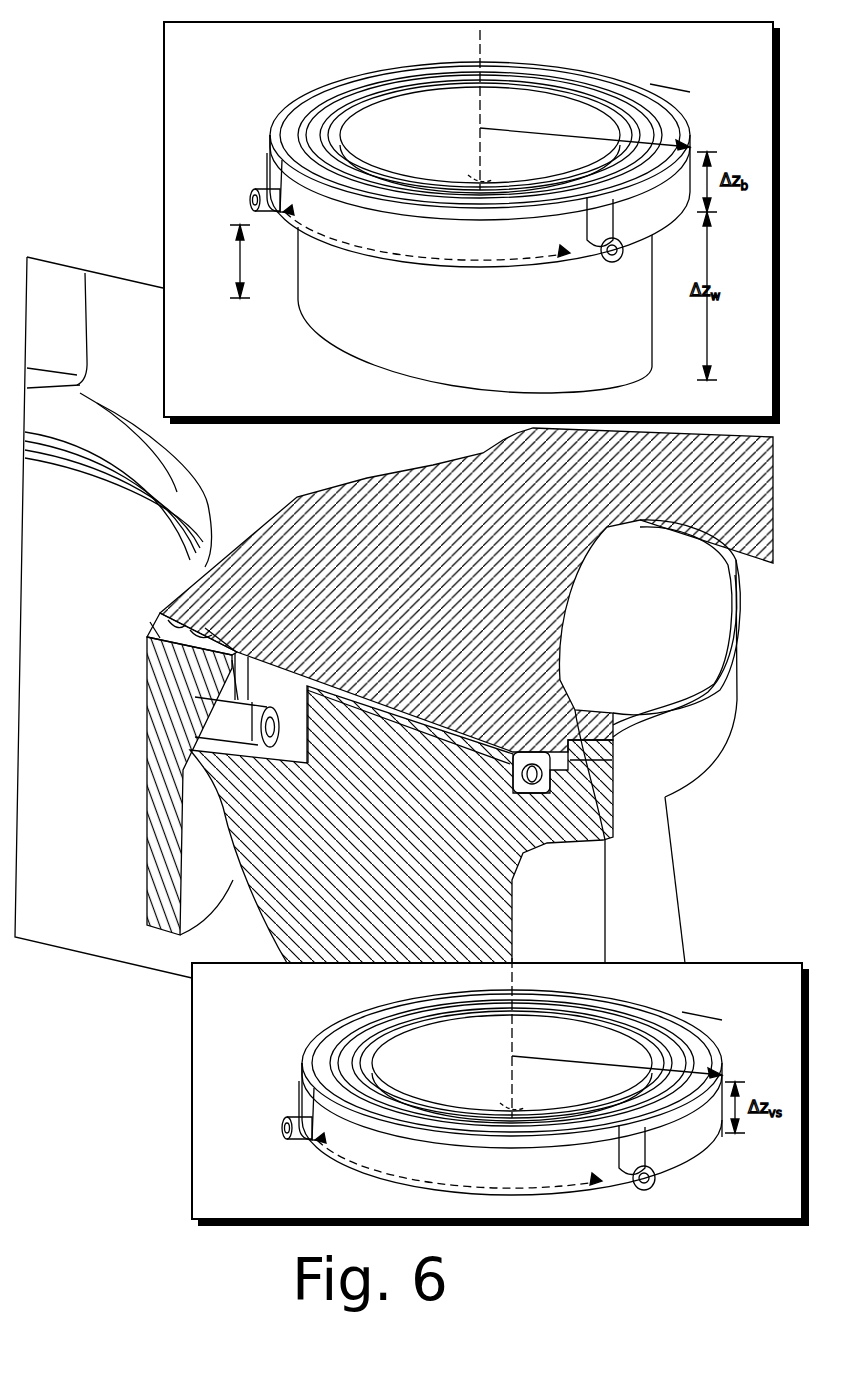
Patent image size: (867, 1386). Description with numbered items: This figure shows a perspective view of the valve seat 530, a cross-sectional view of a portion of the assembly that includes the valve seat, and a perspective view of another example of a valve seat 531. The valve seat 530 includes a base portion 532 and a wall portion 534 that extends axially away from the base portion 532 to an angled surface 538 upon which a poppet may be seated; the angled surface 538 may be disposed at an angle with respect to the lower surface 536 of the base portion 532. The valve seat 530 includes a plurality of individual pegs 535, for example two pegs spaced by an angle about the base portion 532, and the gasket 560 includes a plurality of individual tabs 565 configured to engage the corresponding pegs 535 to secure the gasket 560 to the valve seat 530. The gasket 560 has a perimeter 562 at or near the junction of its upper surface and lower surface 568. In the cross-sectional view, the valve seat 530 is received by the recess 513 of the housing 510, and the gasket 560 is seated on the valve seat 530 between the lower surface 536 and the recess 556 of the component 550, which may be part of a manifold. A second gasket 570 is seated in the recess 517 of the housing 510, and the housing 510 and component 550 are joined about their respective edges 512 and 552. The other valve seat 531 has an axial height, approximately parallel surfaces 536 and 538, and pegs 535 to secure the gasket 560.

The housing 510 is at (405, 901).
The edge 512 is at (663, 770).
The recess 513 is at (299, 698).
The recess 517 is at (526, 800).
The valve seat 530 is at (82, 537).
The valve seat 531 is at (693, 1158).
The base portion 532 is at (197, 679).
The wall portion 534 is at (229, 870).
The peg 535 is at (217, 713).
The lower surface 536 is at (150, 635).
The angled surface 538 is at (128, 806).
The component 550 is at (437, 584).
The edge 552 is at (663, 697).
The recess 556 is at (163, 616).
The gasket 560 is at (272, 72).
The perimeter 562 is at (665, 93).
The tab 565 is at (200, 697).
The lower surface 568 is at (283, 125).
The gasket 570 is at (542, 795).